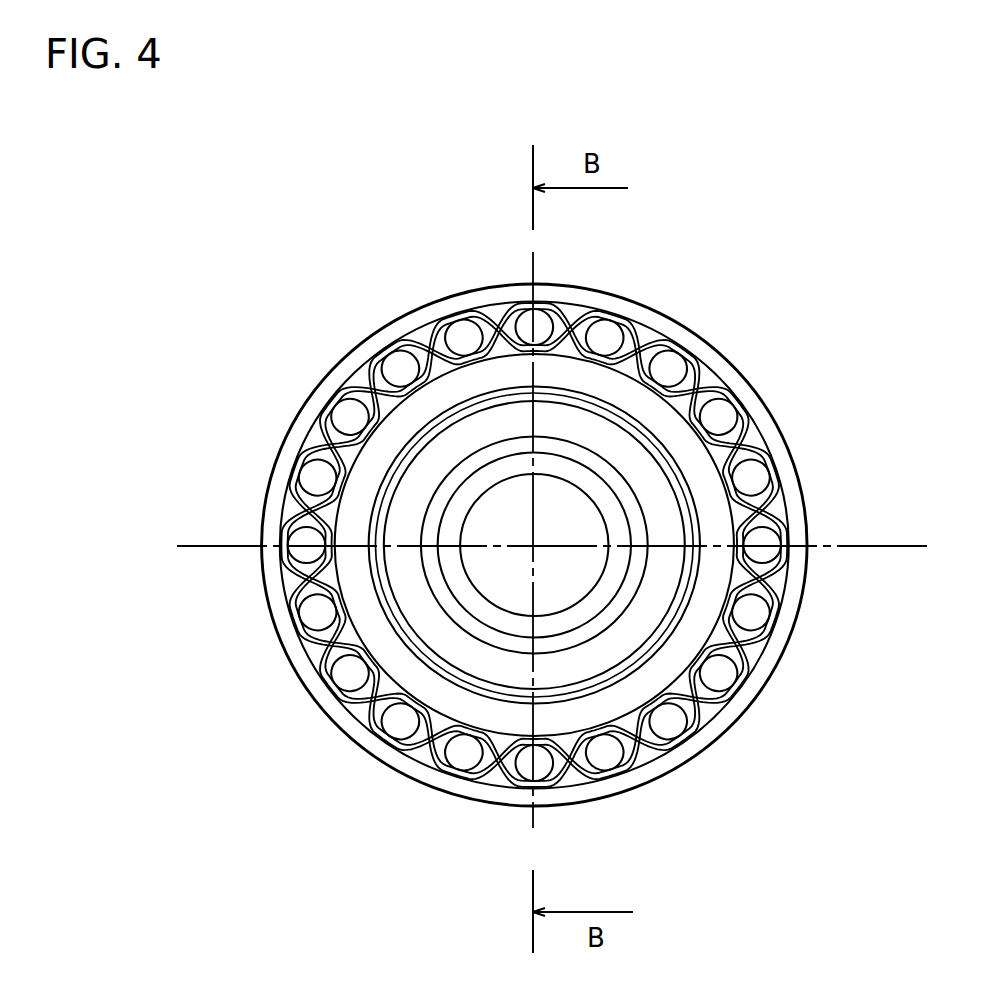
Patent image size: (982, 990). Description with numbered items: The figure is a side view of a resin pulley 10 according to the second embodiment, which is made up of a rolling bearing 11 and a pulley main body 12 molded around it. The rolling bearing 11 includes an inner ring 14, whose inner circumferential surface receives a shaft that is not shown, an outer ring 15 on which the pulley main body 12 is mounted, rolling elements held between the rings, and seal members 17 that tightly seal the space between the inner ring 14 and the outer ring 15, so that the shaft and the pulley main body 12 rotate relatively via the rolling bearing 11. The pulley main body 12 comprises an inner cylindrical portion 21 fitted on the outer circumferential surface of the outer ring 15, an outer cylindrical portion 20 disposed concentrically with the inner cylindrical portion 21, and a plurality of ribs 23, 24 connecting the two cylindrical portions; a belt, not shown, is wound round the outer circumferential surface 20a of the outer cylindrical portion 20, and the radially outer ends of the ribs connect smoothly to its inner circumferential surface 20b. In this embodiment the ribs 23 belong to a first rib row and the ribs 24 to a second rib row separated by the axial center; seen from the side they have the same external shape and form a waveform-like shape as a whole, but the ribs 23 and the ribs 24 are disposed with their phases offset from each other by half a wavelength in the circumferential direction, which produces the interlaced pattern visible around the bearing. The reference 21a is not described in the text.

The resin pulley 10 is at (680, 237).
The rolling bearing 11 is at (670, 494).
The pulley main body 12 is at (762, 375).
The inner ring 14 is at (582, 617).
The outer ring 15 is at (687, 607).
The seal member 17 is at (650, 618).
The outer cylindrical portion 20 is at (452, 305).
The outer circumferential surface 20a is at (598, 296).
The inner circumferential surface 20b is at (640, 322).
The inner cylindrical portion 21 is at (417, 412).
The pocket 21a is at (330, 500).
The rib 23 is at (328, 412).
The rib 24 is at (300, 460).